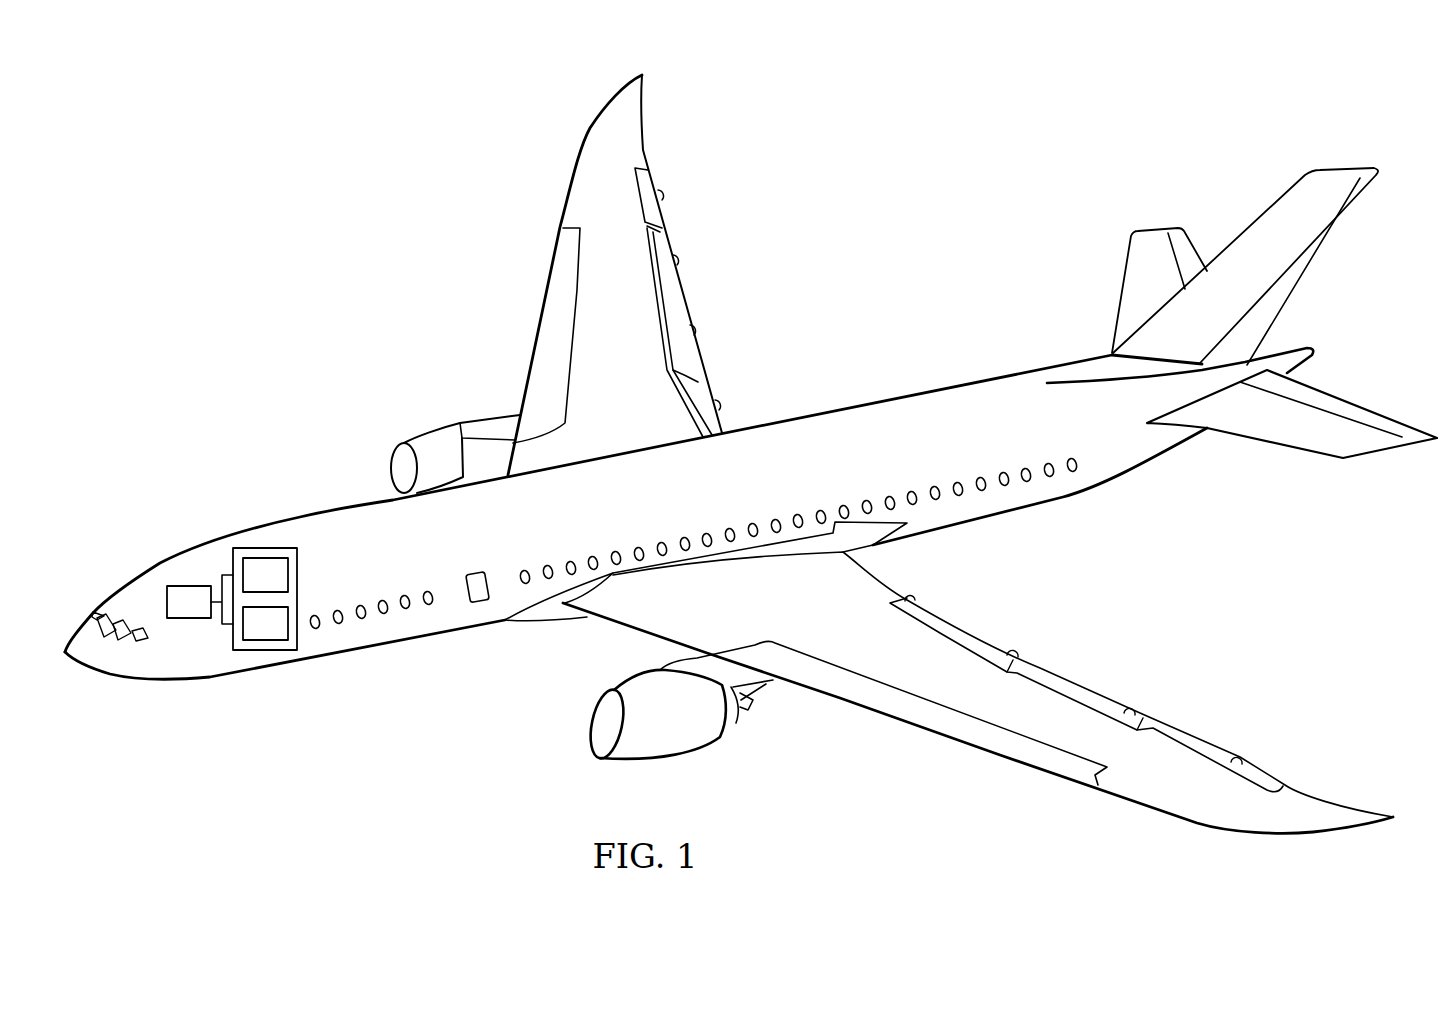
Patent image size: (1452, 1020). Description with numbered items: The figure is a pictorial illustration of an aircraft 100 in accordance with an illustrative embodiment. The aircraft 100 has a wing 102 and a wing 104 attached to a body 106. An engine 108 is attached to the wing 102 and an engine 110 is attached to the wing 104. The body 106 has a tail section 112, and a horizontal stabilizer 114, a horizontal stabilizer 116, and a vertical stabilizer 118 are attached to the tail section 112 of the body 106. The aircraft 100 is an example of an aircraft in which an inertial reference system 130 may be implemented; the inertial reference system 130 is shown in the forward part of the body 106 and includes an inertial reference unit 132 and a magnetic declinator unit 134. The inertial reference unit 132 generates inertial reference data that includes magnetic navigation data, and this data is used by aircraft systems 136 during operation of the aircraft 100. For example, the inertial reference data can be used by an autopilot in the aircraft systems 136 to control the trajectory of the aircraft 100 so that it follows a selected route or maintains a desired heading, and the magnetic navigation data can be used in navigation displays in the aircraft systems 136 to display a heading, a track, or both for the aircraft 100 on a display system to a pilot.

The aircraft 100 is at (349, 231).
The wing 102 is at (640, 107).
The wing 104 is at (1223, 828).
The body 106 is at (183, 552).
The engine 108 is at (457, 423).
The engine 110 is at (670, 757).
The tail section 112 is at (1193, 487).
The horizontal stabilizer 114 is at (1125, 267).
The horizontal stabilizer 116 is at (1305, 452).
The vertical stabilizer 118 is at (1342, 225).
The inertial reference system 130 is at (300, 576).
The inertial reference unit 132 is at (264, 558).
The magnetic declinator unit 134 is at (270, 650).
The aircraft systems 136 is at (190, 618).